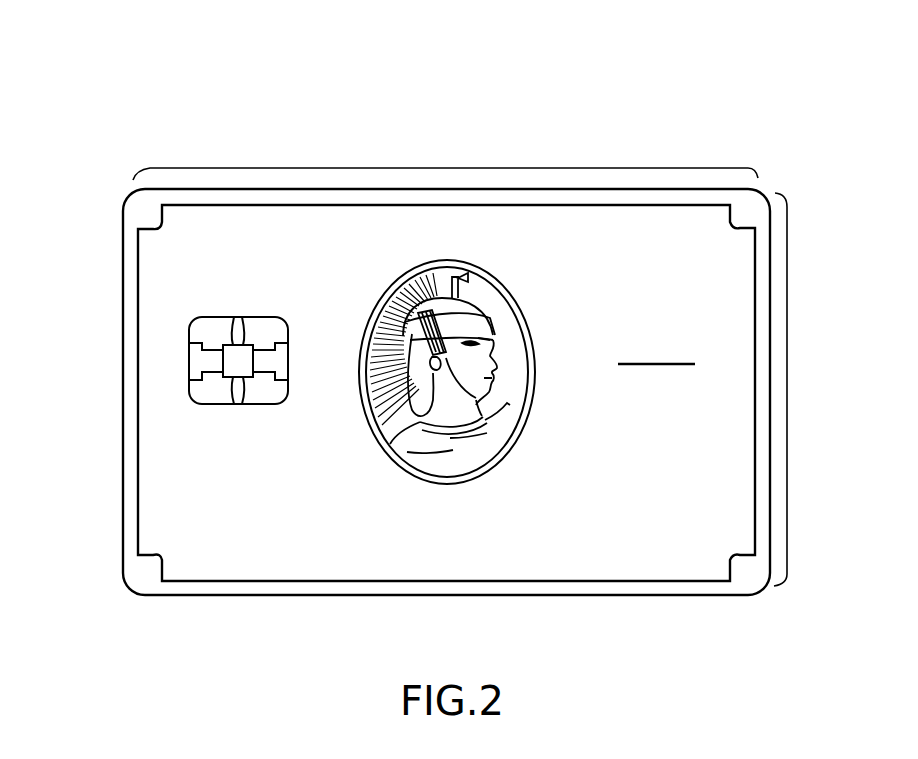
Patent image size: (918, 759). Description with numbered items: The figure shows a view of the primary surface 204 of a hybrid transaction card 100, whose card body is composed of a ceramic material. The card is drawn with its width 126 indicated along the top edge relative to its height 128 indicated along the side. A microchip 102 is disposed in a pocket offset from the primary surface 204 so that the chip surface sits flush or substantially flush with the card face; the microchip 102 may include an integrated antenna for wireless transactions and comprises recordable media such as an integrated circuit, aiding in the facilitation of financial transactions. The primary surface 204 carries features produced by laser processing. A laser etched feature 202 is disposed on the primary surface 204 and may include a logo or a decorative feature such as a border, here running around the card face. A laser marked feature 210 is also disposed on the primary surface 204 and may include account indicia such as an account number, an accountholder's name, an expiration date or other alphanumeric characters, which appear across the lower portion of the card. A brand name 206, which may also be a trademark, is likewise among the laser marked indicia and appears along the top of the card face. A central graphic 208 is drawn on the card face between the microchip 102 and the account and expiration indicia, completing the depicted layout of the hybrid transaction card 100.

The hybrid transaction card 100 is at (137, 111).
The microchip 102 is at (197, 358).
The width 126 is at (443, 168).
The height 128 is at (789, 381).
The laser etched feature 202 is at (386, 200).
The primary surface 204 is at (636, 267).
The brand name 206 is at (510, 228).
The logo graphic 208 is at (495, 440).
The laser marked feature 210 is at (258, 562).